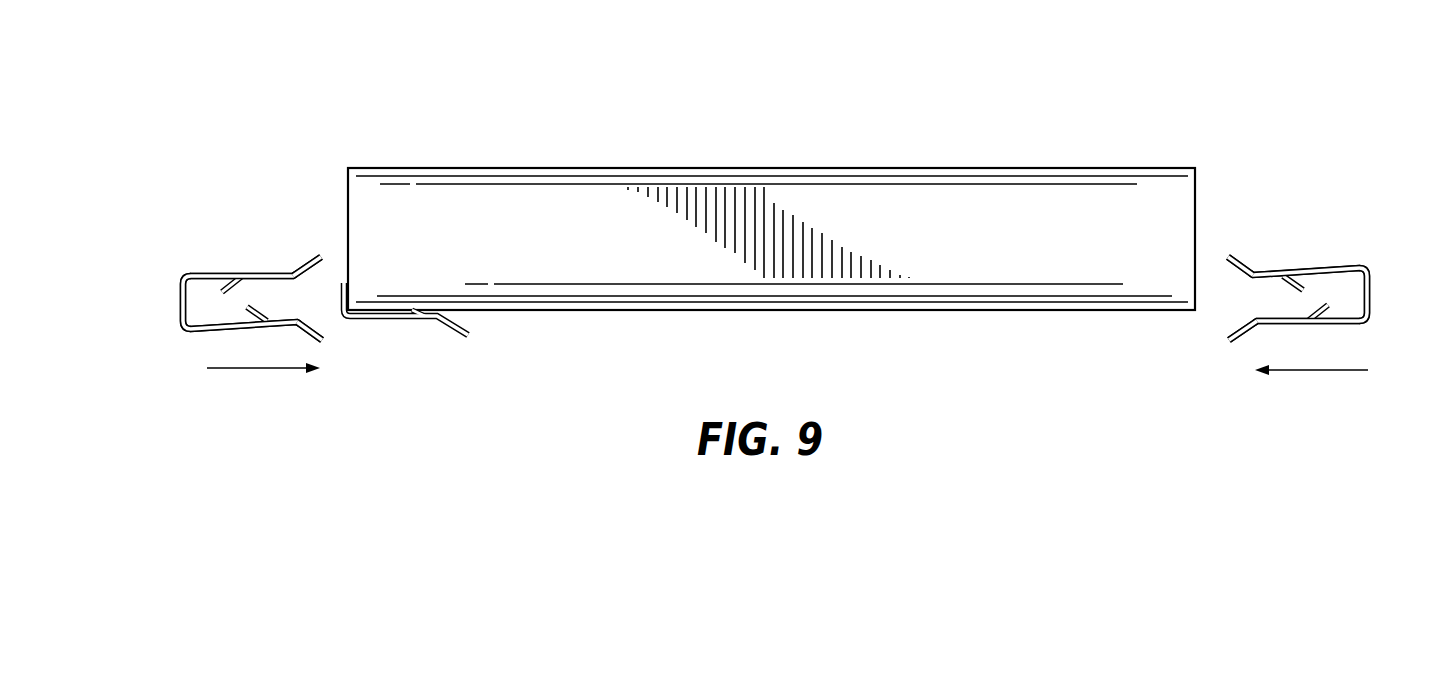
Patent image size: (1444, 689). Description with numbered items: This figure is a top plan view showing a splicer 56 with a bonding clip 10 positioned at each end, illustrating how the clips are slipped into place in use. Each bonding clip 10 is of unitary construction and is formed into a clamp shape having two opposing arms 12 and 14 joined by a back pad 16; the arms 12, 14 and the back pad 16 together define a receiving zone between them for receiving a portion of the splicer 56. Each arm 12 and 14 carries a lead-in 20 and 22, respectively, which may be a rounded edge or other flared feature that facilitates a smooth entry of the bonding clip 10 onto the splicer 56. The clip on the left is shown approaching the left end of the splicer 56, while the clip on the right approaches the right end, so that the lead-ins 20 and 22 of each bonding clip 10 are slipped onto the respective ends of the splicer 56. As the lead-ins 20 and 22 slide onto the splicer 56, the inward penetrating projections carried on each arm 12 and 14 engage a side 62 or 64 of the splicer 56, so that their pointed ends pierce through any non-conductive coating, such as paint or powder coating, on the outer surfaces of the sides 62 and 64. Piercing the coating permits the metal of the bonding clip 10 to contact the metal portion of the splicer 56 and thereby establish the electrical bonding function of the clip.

The bonding clip 10 is at (222, 212).
The arm 12 is at (197, 333).
The arm 14 is at (270, 273).
The back pad 16 is at (182, 305).
The lead-in 20 is at (312, 303).
The lead-in 22 is at (316, 283).
The splicer 56 is at (1054, 124).
The side of the splicer 62 is at (682, 312).
The side of the splicer 64 is at (764, 168).